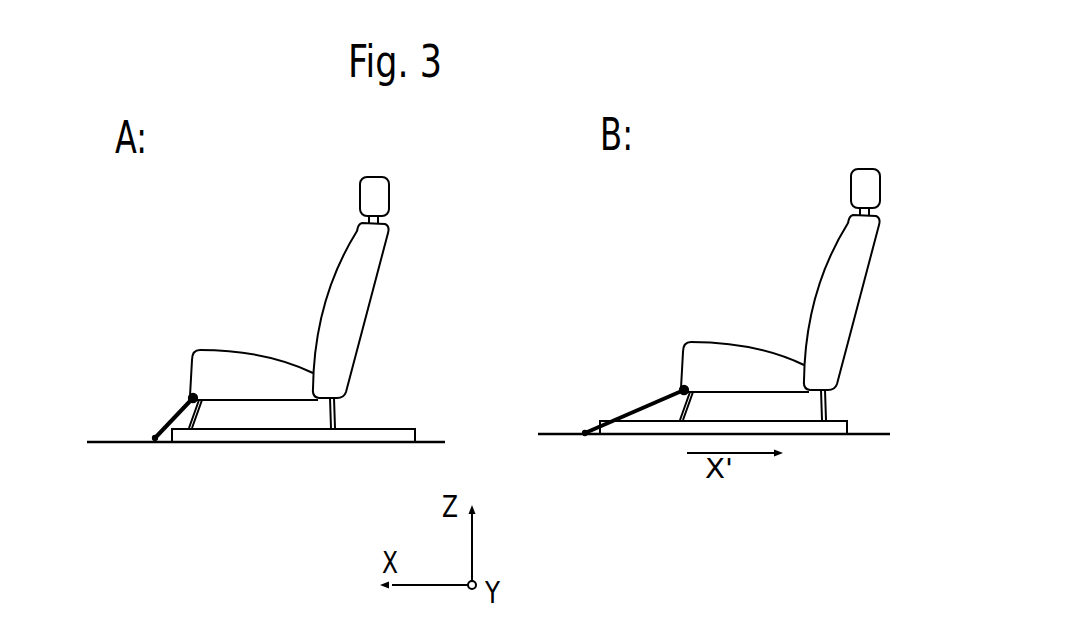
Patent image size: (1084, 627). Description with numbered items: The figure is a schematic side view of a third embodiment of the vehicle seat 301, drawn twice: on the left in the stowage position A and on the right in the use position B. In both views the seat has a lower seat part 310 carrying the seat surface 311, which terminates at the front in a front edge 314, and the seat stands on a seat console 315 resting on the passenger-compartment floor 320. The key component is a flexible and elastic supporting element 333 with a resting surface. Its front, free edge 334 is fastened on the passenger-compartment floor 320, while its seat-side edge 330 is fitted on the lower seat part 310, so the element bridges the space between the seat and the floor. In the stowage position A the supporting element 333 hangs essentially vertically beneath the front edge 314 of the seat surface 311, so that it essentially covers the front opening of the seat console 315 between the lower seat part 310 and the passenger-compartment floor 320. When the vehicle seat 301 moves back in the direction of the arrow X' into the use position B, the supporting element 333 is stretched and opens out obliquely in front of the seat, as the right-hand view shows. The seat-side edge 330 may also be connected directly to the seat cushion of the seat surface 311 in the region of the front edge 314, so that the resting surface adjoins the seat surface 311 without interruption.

The vehicle seat 301 is at (218, 256).
The lower seat part 310 is at (249, 340).
The seat surface 311 is at (286, 347).
The front edge 314 is at (192, 357).
The seat console 315 is at (360, 433).
The passenger-compartment floor 320 is at (113, 455).
The seat-side edge 330 is at (193, 398).
The supporting element 333 is at (160, 405).
The front, free edge 334 is at (150, 436).